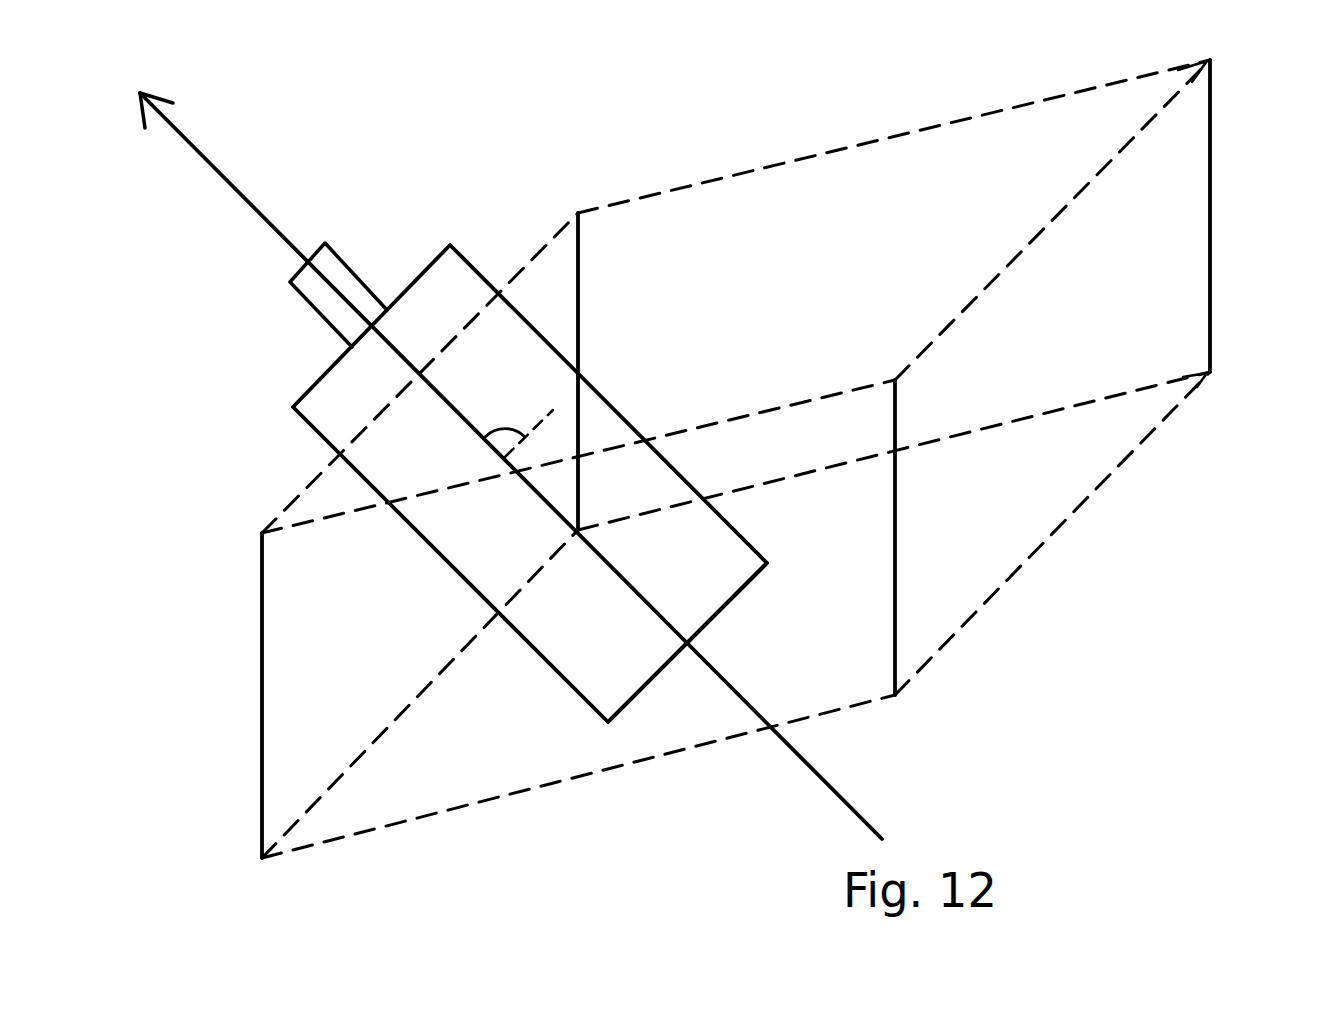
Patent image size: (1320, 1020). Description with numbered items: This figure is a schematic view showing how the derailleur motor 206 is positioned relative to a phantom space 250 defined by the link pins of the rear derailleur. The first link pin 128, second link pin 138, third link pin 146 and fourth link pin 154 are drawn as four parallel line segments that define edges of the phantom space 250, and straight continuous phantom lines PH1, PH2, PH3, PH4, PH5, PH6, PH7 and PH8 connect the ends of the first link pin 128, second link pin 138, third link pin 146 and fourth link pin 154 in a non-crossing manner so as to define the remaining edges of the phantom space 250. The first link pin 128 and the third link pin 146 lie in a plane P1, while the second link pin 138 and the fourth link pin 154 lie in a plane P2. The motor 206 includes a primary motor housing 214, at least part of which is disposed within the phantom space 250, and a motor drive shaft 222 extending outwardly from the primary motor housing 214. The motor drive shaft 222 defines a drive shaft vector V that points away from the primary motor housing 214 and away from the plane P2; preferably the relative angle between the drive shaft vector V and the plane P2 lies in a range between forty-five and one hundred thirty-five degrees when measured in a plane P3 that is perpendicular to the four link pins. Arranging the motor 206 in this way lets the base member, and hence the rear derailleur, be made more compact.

The drive shaft vector V is at (201, 150).
The first link pin 128 is at (580, 265).
The second link pin 138 is at (1212, 140).
The third link pin 146 is at (263, 645).
The fourth link pin 154 is at (898, 551).
The motor 206 is at (633, 631).
The primary motor housing 214 is at (710, 597).
The motor drive shaft 222 is at (340, 280).
The phantom space 250 is at (822, 283).
The plane P1 is at (420, 509).
The plane P2 is at (936, 377).
The plane P3 is at (736, 296).
The phantom line PH1 is at (530, 262).
The phantom line PH2 is at (829, 145).
The phantom line PH3 is at (1045, 225).
The phantom line PH4 is at (720, 418).
The phantom line PH5 is at (427, 689).
The phantom line PH6 is at (1005, 421).
The phantom line PH7 is at (1098, 488).
The phantom line PH8 is at (469, 803).